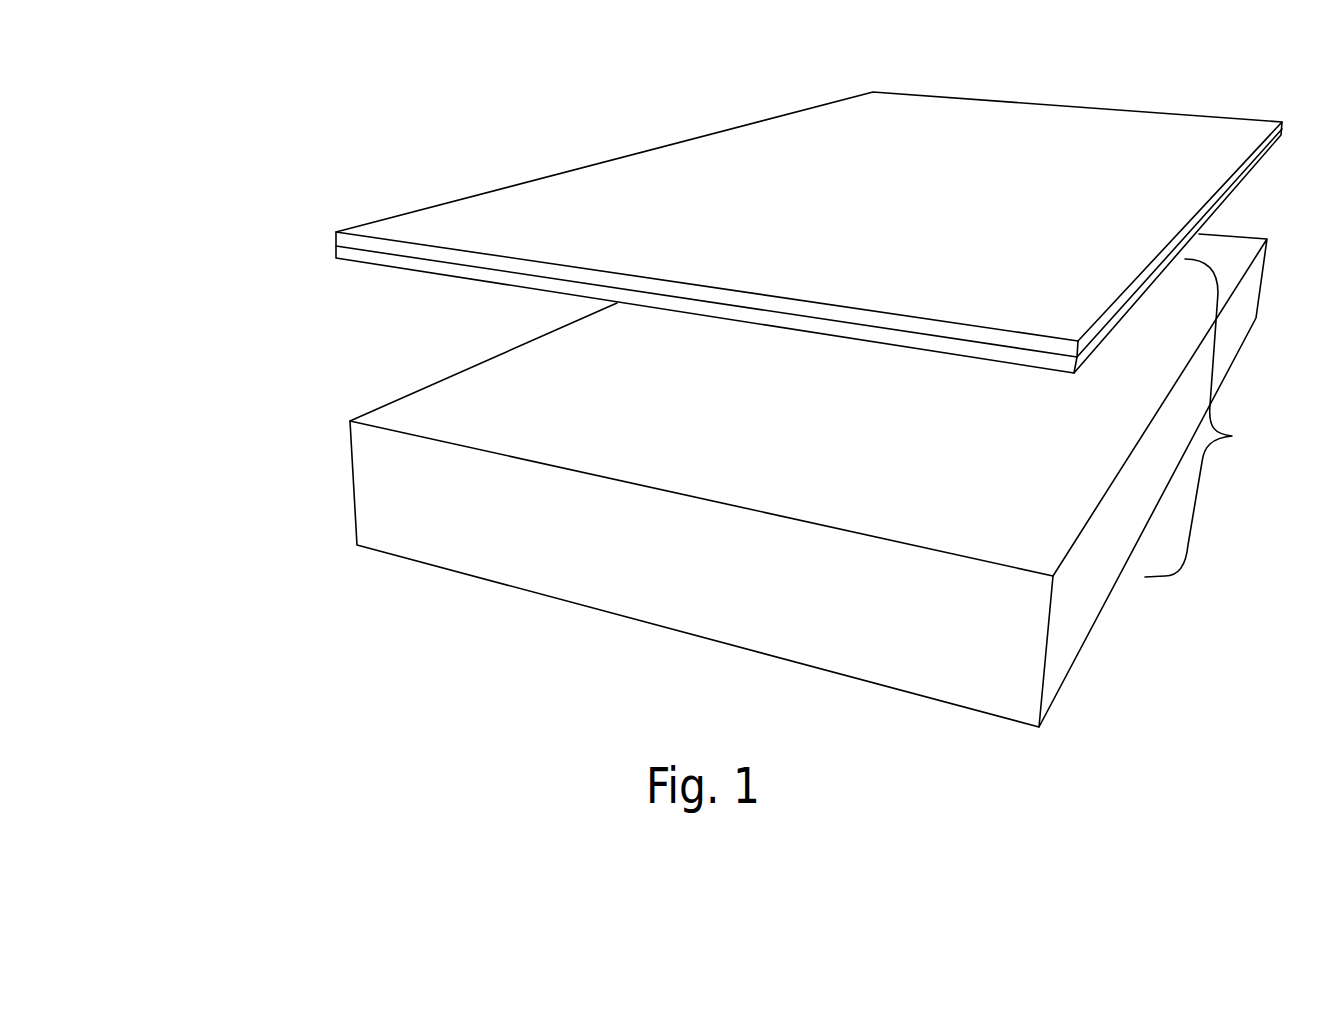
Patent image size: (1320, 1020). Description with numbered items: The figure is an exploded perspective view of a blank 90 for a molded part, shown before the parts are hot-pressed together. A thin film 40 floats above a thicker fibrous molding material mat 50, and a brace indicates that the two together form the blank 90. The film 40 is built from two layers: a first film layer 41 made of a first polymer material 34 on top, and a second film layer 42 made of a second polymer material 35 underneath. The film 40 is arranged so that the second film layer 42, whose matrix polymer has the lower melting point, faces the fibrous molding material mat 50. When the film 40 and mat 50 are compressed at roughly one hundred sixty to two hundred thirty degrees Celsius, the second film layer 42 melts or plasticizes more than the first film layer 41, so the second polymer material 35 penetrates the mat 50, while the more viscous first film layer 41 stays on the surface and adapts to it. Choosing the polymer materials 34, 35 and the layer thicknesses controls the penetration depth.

The film 40 is at (475, 123).
The first film layer 41 is at (712, 243).
The first polymer material 34 is at (341, 236).
The second film layer 42 is at (712, 247).
The second polymer material 35 is at (357, 258).
The fibrous molding material mat 50 is at (380, 503).
The blank 90 is at (1232, 436).